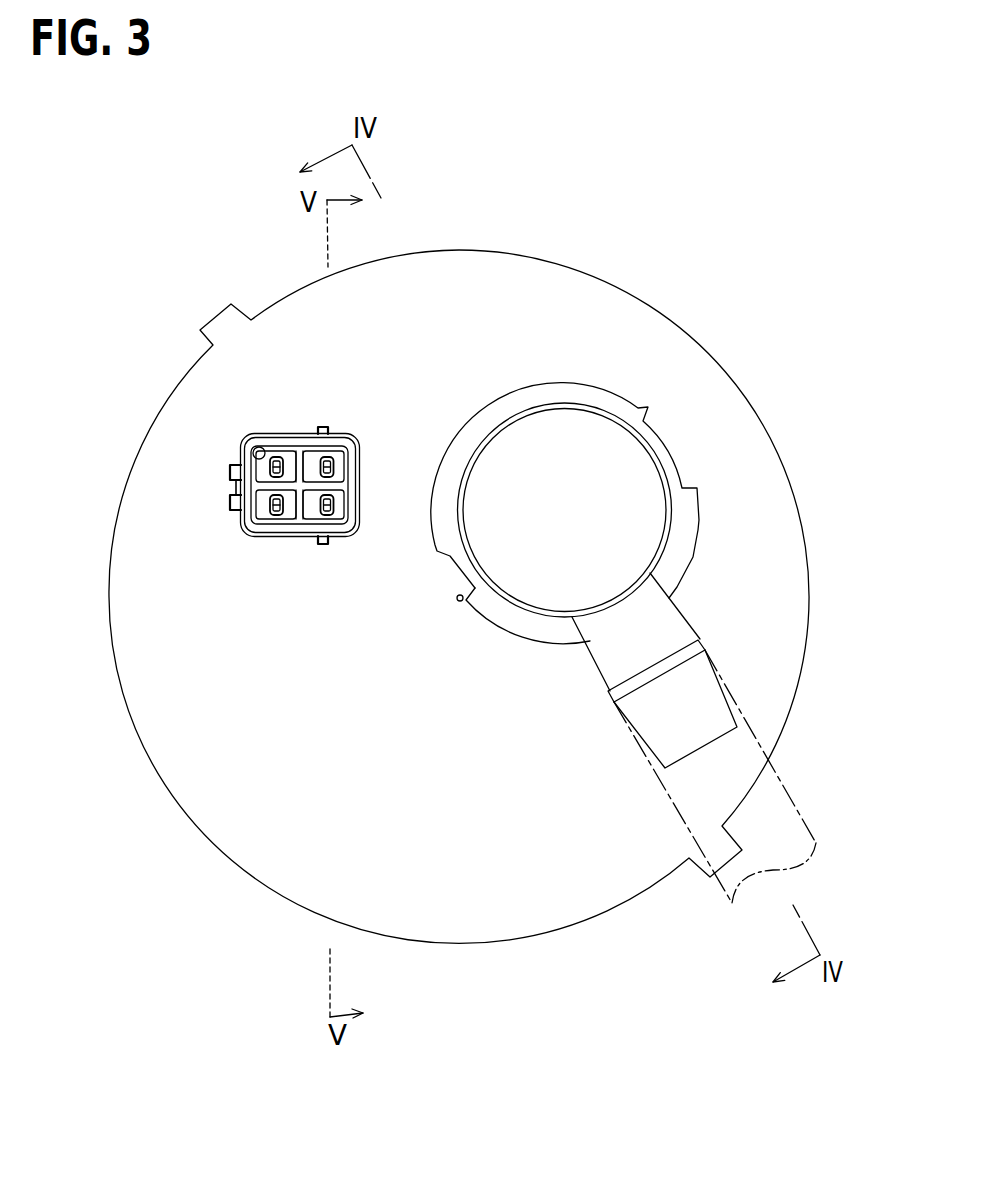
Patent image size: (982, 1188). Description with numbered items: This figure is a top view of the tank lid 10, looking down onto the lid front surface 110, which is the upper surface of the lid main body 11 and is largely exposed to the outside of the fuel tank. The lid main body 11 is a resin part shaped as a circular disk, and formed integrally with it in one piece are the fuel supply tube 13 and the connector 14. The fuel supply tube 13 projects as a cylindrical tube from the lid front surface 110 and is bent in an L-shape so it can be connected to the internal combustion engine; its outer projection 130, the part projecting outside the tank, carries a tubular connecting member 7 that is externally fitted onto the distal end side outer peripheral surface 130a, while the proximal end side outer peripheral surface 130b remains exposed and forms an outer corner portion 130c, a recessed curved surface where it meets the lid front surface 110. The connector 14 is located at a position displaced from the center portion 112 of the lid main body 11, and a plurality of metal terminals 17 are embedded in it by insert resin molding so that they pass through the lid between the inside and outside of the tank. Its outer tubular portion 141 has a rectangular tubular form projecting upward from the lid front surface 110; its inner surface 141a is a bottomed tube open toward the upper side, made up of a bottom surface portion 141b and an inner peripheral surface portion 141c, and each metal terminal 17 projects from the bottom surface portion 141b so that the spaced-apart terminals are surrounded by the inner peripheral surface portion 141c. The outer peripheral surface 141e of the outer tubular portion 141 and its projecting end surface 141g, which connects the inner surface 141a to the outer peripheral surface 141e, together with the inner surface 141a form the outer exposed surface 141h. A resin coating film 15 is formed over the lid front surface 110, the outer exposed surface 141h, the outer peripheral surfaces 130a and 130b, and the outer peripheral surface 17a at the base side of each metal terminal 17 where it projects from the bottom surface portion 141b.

The connecting member 7 is at (797, 808).
The tank lid 10 is at (722, 357).
The lid main body 11 is at (315, 893).
The fuel supply tube 13 is at (572, 617).
The connector 14 is at (352, 437).
The resin coating film 15 is at (235, 477).
The metal terminals 17 is at (322, 453).
The outer peripheral surface of a base side of each metal terminal 17a is at (278, 457).
The lid front surface 110 is at (568, 328).
The center portion 112 is at (458, 601).
The outer projection 130 is at (847, 689).
The distal end side outer peripheral surface 130a is at (729, 702).
The proximal end side outer peripheral surface 130b is at (625, 533).
The outer corner portion 130c is at (700, 502).
The outer tubular portion 141 is at (247, 530).
The inner surface 141a is at (337, 508).
The bottom surface portion 141b is at (276, 497).
The inner peripheral surface portion 141c is at (262, 440).
The outer peripheral surface 141e is at (340, 540).
The projecting end surface 141g is at (339, 538).
The outer exposed surface 141h is at (86, 723).